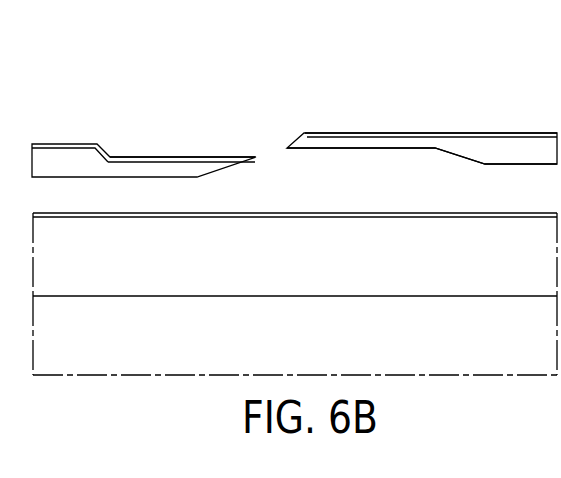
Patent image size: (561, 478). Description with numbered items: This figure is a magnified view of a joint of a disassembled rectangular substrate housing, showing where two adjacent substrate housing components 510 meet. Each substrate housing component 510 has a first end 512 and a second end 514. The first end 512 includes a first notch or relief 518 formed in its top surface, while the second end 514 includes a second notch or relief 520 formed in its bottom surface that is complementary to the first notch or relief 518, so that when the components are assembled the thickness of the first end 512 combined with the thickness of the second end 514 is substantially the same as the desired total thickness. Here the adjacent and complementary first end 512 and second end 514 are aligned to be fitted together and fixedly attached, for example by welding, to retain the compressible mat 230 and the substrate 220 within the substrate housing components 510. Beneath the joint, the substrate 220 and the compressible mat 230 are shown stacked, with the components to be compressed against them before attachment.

The first end 512 is at (196, 124).
The first notch or relief 518 is at (133, 160).
The second end 514 is at (383, 107).
The substrate housing component 510 is at (493, 131).
The second notch or relief 520 is at (377, 143).
The compressible mat 230 is at (325, 265).
The substrate 220 is at (325, 349).